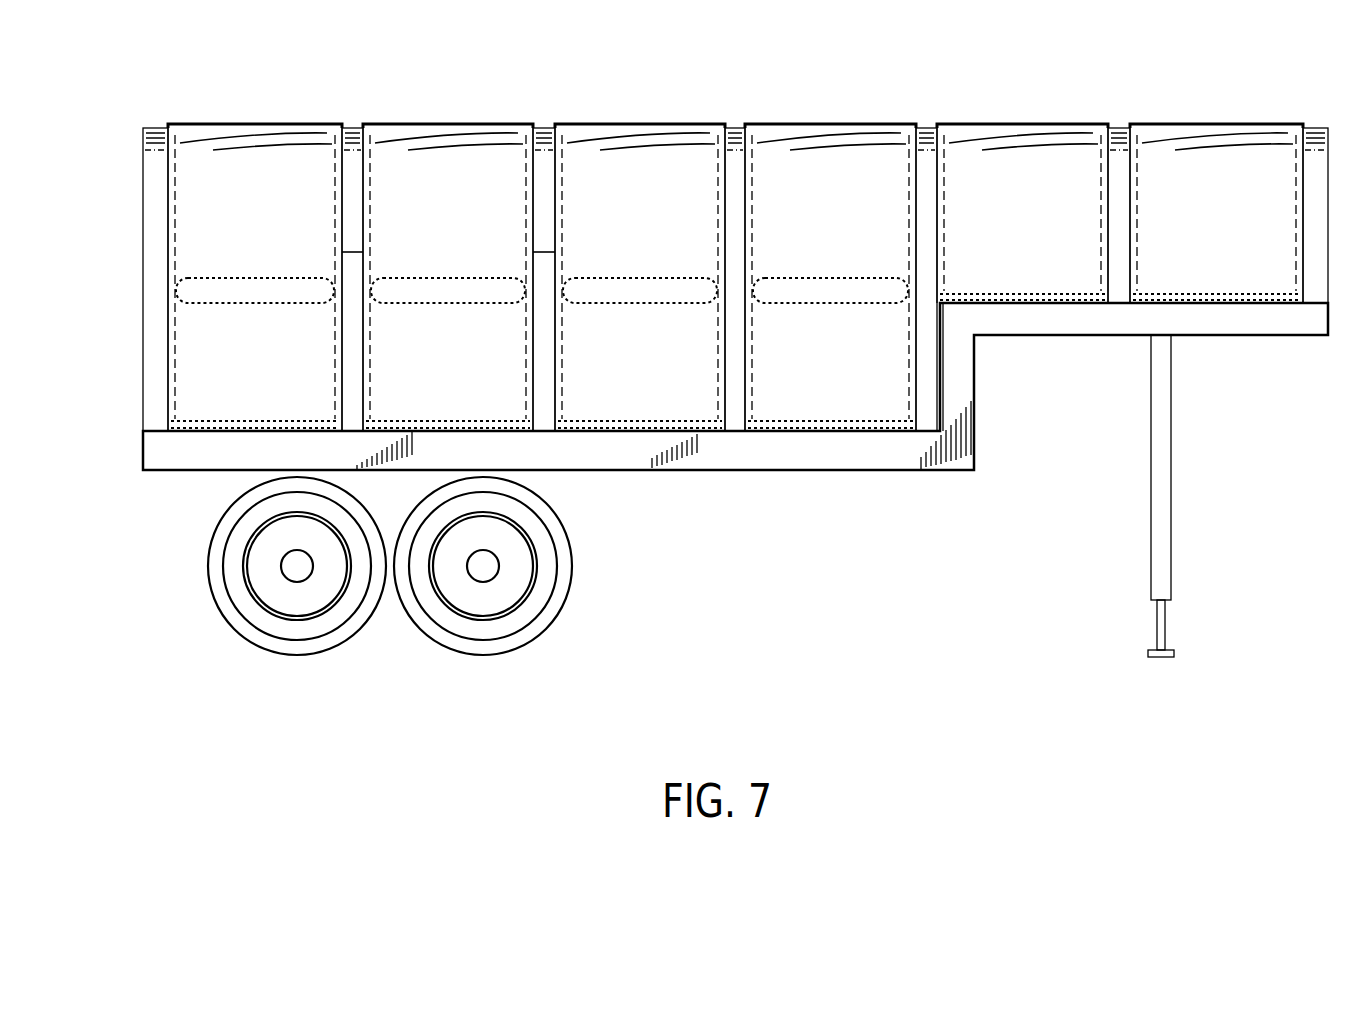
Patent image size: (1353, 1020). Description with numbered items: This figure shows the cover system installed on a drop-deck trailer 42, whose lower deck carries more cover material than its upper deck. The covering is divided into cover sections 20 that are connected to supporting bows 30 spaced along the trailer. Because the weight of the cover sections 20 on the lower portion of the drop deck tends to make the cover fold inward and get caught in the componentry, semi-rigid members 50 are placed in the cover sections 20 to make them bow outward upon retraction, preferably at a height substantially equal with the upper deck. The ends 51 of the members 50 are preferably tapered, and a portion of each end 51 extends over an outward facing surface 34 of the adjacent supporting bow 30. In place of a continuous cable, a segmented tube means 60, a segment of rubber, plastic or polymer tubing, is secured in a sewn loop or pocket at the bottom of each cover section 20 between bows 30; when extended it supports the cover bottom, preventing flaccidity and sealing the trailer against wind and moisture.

The cover section 20 is at (655, 183).
The supporting bow 30 is at (353, 387).
The outward facing surface 34 is at (449, 279).
The drop-deck trailer 42 is at (767, 443).
The semi-rigid member 50 is at (453, 293).
The end 51 is at (338, 292).
The segmented tube means 60 is at (190, 432).